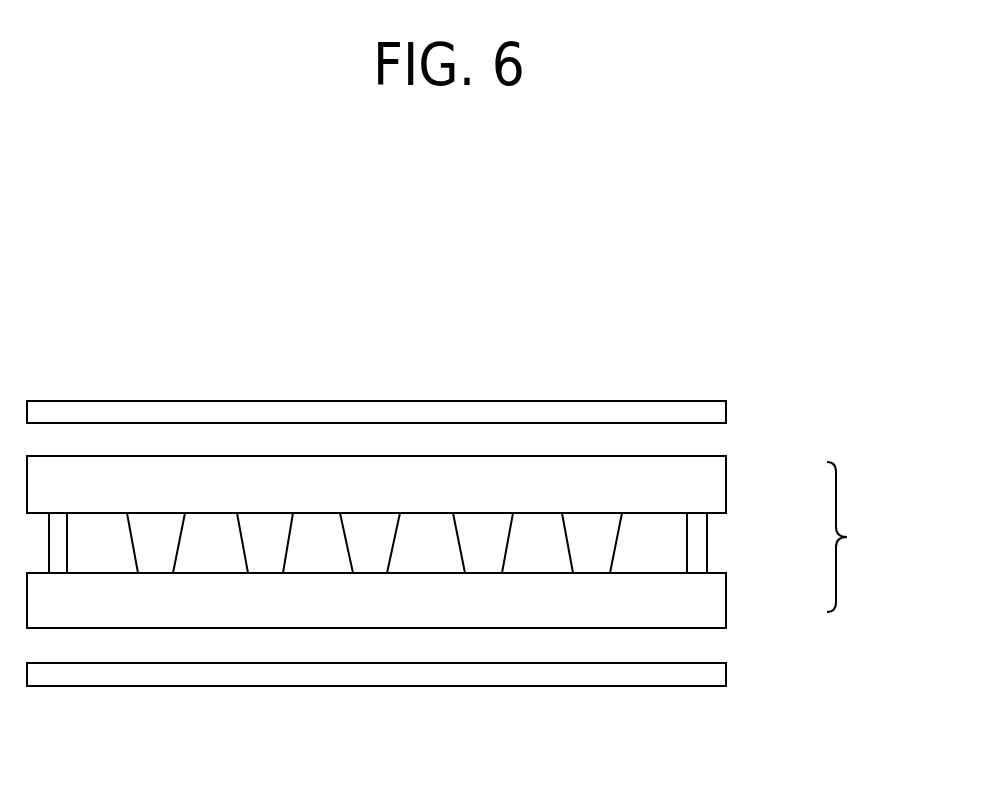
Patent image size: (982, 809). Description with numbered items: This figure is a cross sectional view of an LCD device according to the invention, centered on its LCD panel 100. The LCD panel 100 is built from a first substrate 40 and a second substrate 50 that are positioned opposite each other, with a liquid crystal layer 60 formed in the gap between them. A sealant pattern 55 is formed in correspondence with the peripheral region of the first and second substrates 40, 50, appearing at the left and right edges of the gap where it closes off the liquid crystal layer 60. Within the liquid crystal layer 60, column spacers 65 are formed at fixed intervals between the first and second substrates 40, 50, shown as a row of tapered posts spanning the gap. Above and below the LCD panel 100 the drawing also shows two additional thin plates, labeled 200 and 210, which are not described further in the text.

The upper polarizer 200 is at (726, 412).
The first substrate 40 is at (726, 480).
The sealant pattern 55 is at (698, 537).
The second substrate 50 is at (726, 598).
The lower polarizer 210 is at (726, 673).
The liquid crystal layer 60 is at (427, 562).
The column spacer 65 is at (488, 562).
The LCD panel 100 is at (872, 537).